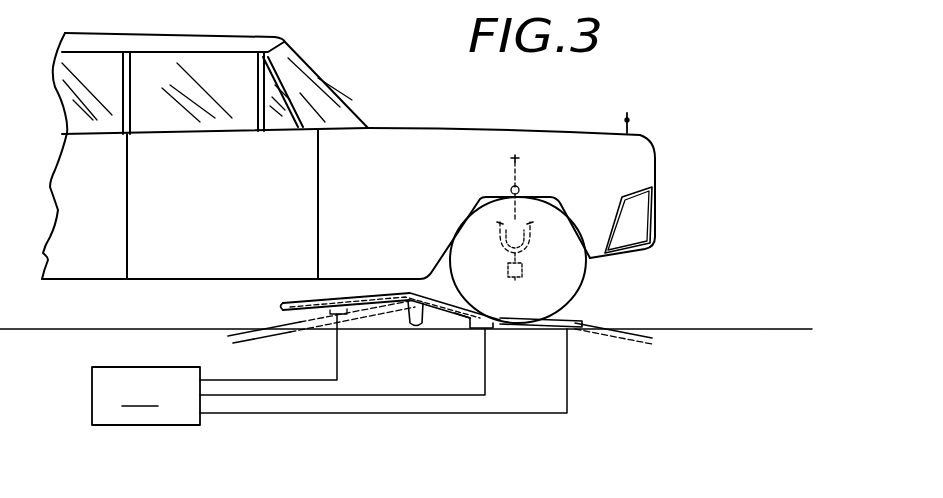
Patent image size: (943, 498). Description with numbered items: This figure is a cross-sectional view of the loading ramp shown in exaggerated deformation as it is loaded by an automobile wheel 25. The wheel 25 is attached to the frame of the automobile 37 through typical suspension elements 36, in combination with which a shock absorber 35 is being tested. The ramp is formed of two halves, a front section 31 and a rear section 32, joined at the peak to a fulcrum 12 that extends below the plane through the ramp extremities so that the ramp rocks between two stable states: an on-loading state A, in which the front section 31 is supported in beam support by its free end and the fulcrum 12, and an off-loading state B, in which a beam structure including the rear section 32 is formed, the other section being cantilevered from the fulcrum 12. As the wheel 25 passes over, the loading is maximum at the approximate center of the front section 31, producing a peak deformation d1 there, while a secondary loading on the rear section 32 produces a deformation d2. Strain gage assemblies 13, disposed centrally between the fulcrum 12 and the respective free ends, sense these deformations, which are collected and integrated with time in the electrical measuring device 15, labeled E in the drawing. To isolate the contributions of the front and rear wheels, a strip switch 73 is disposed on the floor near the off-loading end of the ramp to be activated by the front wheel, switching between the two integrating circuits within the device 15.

The automobile 37 is at (398, 124).
The automobile wheel 25 is at (570, 277).
The shock absorber 35 is at (520, 190).
The suspension elements 36 is at (532, 233).
The front section 31 is at (363, 300).
The rear section 32 is at (467, 316).
The fulcrum 12 is at (423, 323).
The strain gage assemblies 13 is at (497, 323).
The strip switch 73 is at (572, 325).
The electrical measuring device 15 is at (329, 379).
The on-loading state A is at (323, 327).
The off-loading state B is at (512, 317).
The electronic unit E is at (140, 394).
The peak deformation d1 is at (248, 358).
The deformation d2 is at (637, 358).